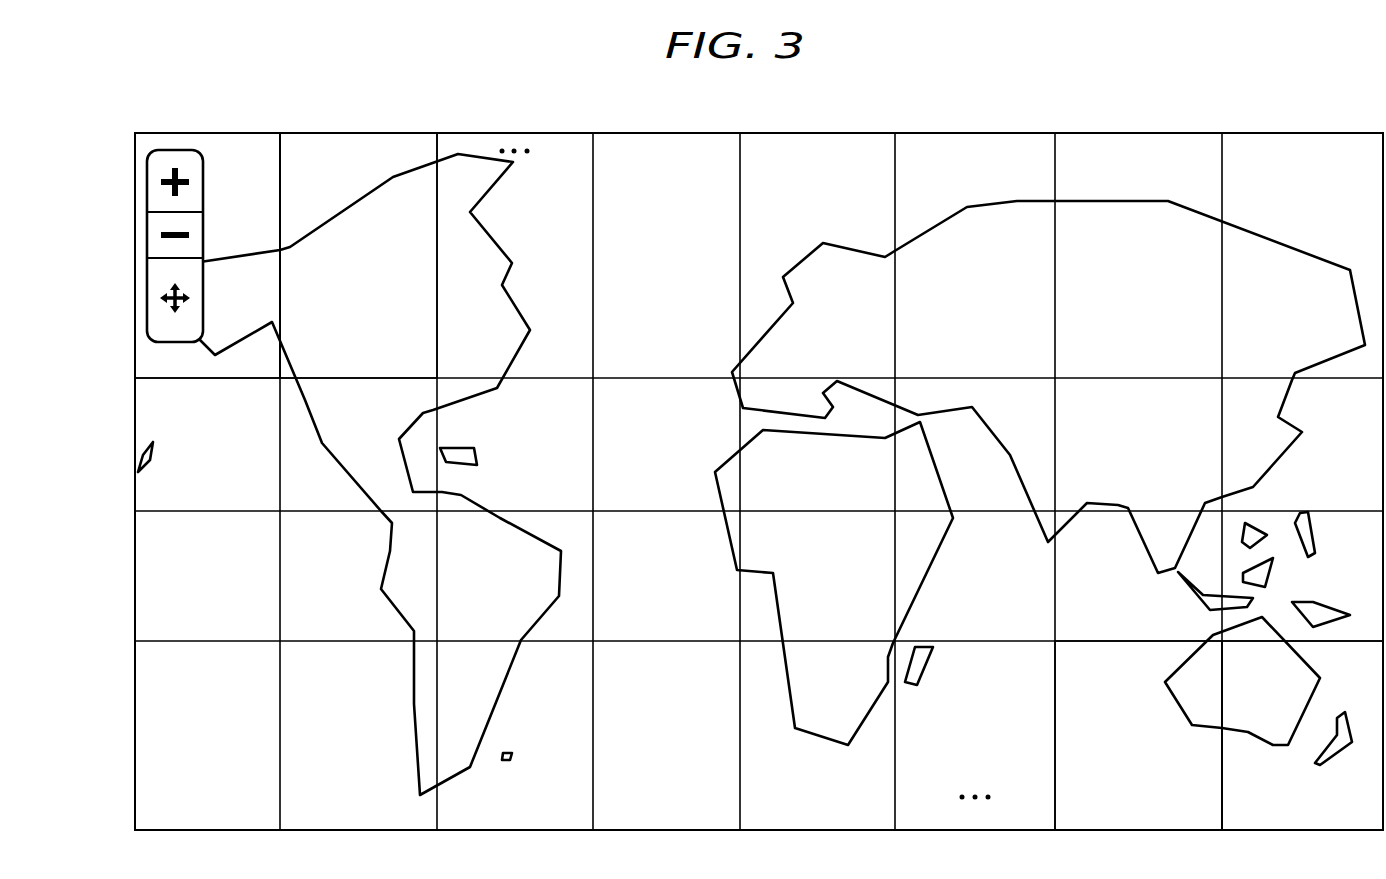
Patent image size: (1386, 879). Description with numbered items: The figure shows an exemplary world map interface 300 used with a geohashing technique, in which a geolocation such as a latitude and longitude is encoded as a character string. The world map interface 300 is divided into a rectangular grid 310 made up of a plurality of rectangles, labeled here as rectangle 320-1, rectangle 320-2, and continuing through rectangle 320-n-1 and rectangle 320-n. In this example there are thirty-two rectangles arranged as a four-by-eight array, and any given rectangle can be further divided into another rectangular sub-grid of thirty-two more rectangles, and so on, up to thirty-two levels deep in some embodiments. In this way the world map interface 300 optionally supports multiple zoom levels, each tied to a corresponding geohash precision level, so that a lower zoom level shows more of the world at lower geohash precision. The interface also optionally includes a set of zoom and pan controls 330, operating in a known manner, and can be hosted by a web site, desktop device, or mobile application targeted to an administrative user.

The world map interface 300 is at (1258, 61).
The rectangular grid 310 is at (1317, 133).
The rectangle 320-1 is at (212, 168).
The rectangle 320-2 is at (313, 168).
The rectangle 320-n-1 is at (1095, 820).
The rectangle 320-n is at (1267, 820).
The zoom and pan controls 330 is at (135, 220).